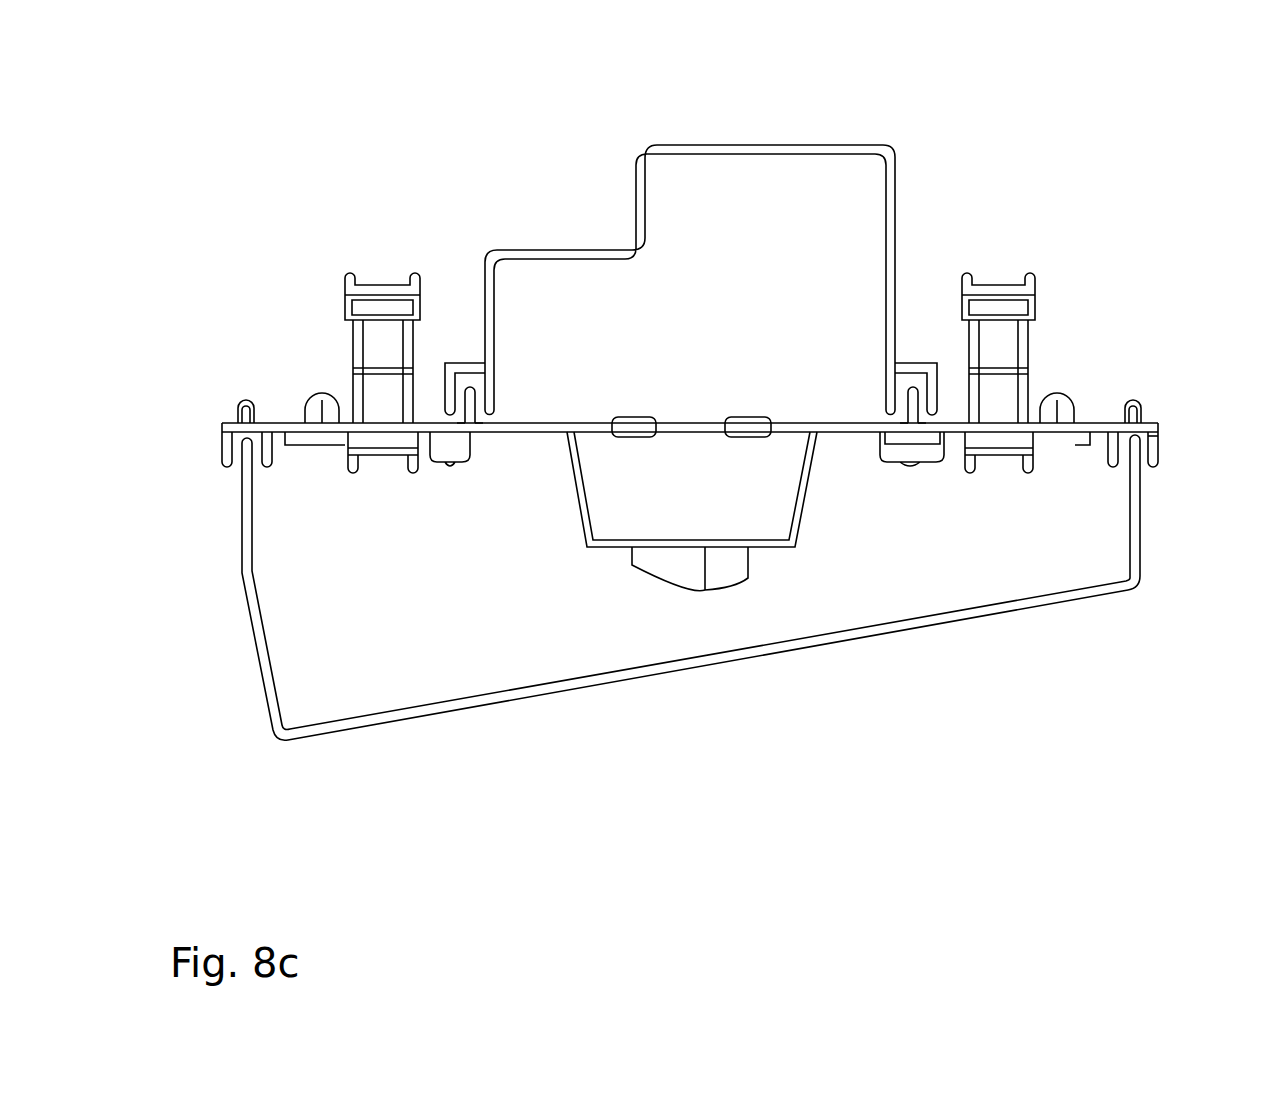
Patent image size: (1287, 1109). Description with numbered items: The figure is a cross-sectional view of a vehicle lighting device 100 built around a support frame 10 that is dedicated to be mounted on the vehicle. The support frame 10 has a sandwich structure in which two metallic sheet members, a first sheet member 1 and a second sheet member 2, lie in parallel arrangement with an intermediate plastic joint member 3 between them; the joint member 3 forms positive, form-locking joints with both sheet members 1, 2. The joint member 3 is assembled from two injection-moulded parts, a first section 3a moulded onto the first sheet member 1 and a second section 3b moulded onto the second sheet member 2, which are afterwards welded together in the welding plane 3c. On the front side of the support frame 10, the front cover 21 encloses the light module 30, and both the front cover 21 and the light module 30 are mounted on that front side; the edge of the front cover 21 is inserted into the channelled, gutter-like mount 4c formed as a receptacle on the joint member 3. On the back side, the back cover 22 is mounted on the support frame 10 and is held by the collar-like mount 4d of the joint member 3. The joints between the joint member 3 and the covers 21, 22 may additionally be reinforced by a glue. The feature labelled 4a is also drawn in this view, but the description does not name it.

The vehicle lighting device 100 is at (367, 175).
The support frame 10 is at (301, 334).
The second section of the joint member 3b is at (350, 338).
The welding plane 3c is at (350, 368).
The first section of the joint member 3a is at (350, 390).
The back cover 22 is at (622, 255).
The collar-like mount 4d is at (914, 380).
The second sheet member 2 is at (1012, 290).
The joint member 3 is at (1030, 352).
The fastening element 4a is at (913, 455).
The gutter-like mount 4c is at (1148, 463).
The first sheet member 1 is at (1015, 470).
The light module 30 is at (720, 590).
The front cover 21 is at (585, 685).